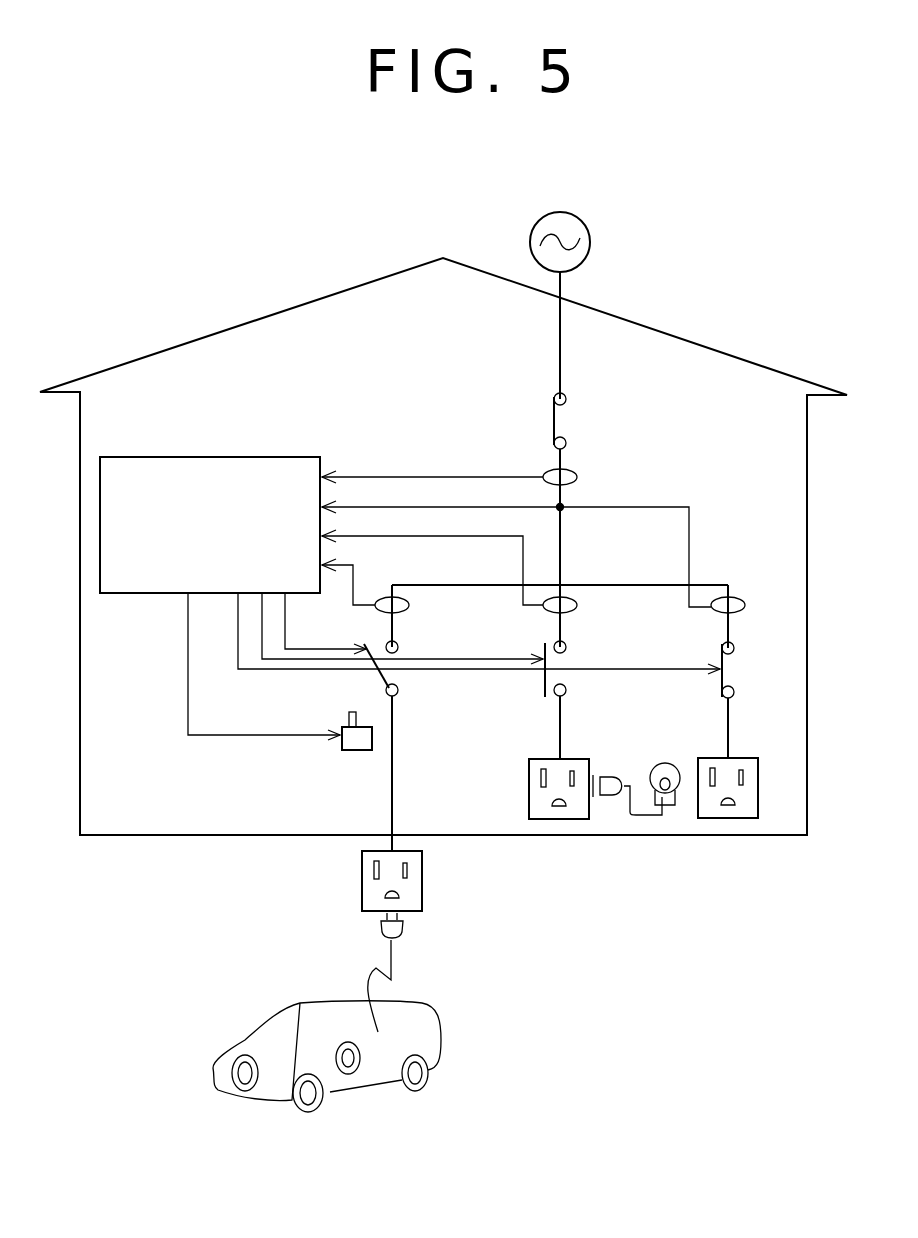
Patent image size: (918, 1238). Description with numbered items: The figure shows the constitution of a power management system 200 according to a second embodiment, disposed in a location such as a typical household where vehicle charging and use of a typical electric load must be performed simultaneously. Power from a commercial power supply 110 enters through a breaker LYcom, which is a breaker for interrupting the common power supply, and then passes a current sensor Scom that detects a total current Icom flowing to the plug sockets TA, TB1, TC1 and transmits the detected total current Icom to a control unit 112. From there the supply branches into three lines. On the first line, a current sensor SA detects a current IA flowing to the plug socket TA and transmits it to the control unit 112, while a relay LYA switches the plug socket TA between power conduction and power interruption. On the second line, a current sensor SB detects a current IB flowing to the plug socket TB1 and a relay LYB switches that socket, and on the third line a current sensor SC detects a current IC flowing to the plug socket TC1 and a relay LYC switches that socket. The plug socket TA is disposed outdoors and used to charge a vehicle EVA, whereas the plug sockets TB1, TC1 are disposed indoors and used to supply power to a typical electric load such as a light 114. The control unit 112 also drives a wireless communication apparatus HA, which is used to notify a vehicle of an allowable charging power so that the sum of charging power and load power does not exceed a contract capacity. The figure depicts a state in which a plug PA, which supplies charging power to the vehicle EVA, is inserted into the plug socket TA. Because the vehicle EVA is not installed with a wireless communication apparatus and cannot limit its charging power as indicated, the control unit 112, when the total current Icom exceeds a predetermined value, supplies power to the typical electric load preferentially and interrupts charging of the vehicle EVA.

The power management system 200 is at (203, 315).
The commercial power supply 110 is at (584, 222).
The control unit 112 is at (245, 456).
The light 114 is at (660, 764).
The breaker LYcom is at (566, 425).
The current sensor Scom is at (578, 480).
The total current Icom is at (432, 468).
The current IA is at (348, 582).
The current IB is at (432, 567).
The current IC is at (516, 554).
The current sensor SA is at (410, 608).
The current sensor SB is at (578, 608).
The current sensor SC is at (776, 614).
The relay LYA is at (400, 686).
The relay LYB is at (568, 690).
The relay LYC is at (736, 680).
The wireless communication apparatus HA is at (340, 727).
The plug socket TA is at (360, 878).
The plug socket TB1 is at (528, 790).
The plug socket TC1 is at (760, 788).
The plug PA is at (406, 930).
The vehicle EVA is at (246, 1030).